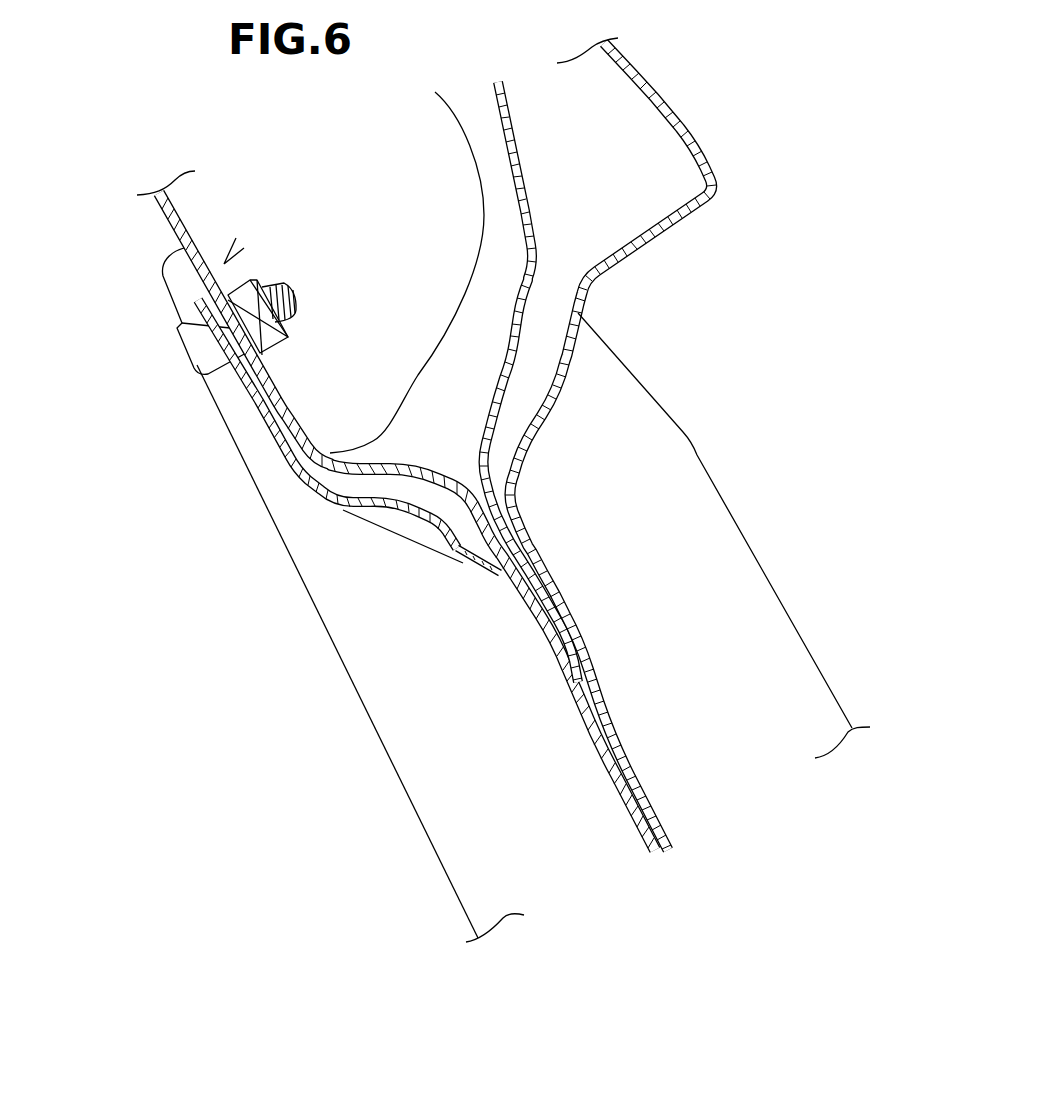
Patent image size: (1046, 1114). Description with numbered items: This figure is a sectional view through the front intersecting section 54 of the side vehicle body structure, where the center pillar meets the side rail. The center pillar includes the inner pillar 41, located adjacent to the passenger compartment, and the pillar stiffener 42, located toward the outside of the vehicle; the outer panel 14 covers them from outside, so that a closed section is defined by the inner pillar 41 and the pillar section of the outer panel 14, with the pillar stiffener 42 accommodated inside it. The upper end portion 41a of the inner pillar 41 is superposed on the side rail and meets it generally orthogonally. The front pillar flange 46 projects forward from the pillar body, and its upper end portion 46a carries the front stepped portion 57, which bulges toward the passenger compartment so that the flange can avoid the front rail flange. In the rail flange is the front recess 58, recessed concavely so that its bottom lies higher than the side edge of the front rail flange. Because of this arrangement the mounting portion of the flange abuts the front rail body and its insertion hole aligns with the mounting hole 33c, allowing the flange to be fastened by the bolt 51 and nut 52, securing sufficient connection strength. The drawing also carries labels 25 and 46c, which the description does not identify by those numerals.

The outer panel 14 is at (720, 160).
The bracket 25 is at (170, 236).
The mounting hole 33c is at (290, 337).
The inner pillar 41 is at (553, 677).
The upper end portion 41a is at (268, 413).
The pillar stiffener 42 is at (520, 352).
The front pillar flange 46 is at (630, 800).
The upper end portion 46a is at (445, 526).
The mounting flange 46c is at (225, 360).
The bolt 51 is at (190, 356).
The nut 52 is at (250, 280).
The front intersecting section 54 is at (242, 244).
The front stepped portion 57 is at (453, 552).
The front recess 58 is at (533, 557).